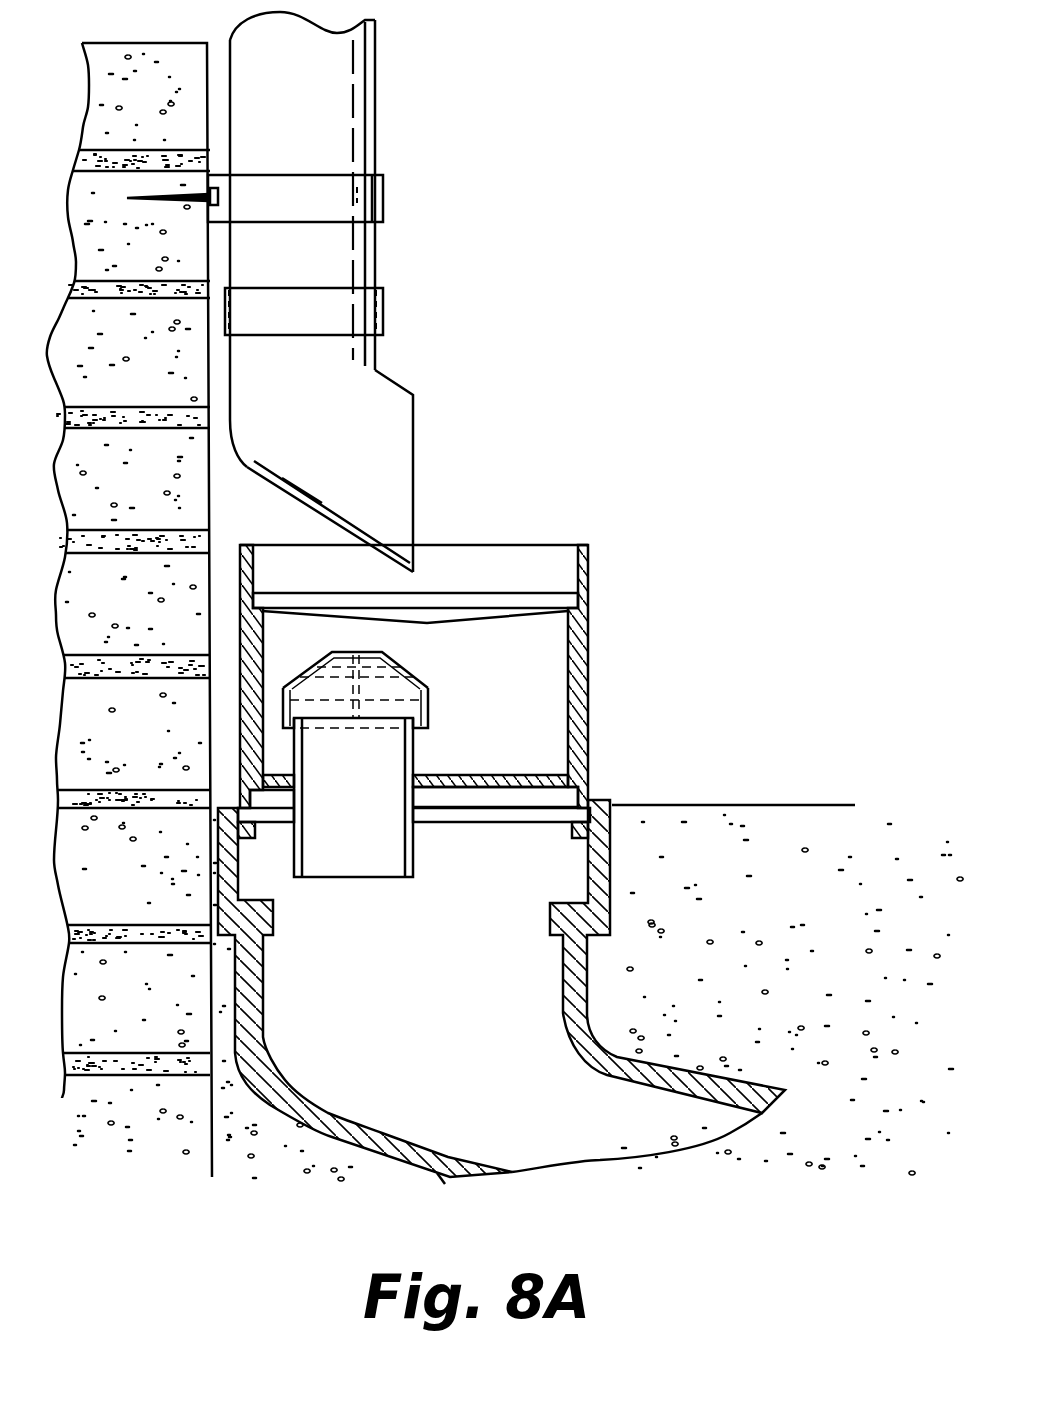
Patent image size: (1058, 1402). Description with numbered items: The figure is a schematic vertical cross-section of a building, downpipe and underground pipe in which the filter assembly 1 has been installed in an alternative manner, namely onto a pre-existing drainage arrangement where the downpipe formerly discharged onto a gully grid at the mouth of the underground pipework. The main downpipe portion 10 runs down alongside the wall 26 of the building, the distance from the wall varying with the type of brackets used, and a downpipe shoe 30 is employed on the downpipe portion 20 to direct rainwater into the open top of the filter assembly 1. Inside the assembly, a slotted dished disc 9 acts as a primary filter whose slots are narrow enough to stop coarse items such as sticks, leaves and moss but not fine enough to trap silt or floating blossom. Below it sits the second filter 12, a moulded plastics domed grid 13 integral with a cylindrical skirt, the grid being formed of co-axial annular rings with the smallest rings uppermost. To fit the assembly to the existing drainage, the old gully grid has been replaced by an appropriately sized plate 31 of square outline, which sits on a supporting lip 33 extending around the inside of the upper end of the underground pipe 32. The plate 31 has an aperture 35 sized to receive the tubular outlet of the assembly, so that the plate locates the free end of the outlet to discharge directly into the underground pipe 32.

The filter assembly 1 is at (598, 687).
The dished disc 9 is at (492, 598).
The main downpipe portion 10 is at (387, 241).
The second filter 12 is at (432, 693).
The domed grid 13 is at (405, 663).
The downpipe portion 20 is at (383, 266).
The wall 26 is at (208, 507).
The downpipe shoe 30 is at (387, 397).
The plate 31 is at (500, 815).
The underground pipe 32 is at (410, 1167).
The supporting lip 33 is at (255, 845).
The aperture 35 is at (420, 796).